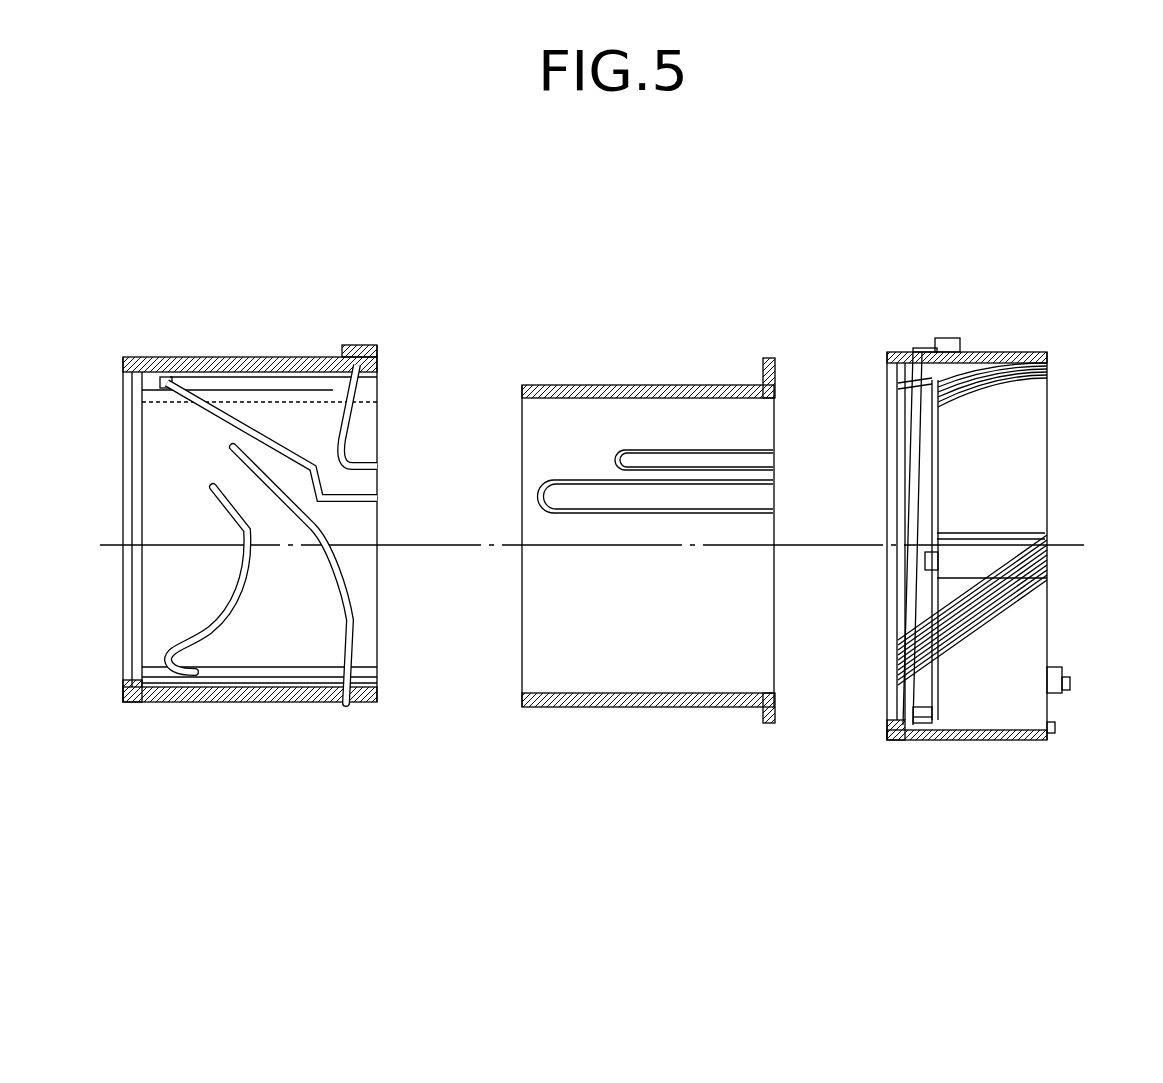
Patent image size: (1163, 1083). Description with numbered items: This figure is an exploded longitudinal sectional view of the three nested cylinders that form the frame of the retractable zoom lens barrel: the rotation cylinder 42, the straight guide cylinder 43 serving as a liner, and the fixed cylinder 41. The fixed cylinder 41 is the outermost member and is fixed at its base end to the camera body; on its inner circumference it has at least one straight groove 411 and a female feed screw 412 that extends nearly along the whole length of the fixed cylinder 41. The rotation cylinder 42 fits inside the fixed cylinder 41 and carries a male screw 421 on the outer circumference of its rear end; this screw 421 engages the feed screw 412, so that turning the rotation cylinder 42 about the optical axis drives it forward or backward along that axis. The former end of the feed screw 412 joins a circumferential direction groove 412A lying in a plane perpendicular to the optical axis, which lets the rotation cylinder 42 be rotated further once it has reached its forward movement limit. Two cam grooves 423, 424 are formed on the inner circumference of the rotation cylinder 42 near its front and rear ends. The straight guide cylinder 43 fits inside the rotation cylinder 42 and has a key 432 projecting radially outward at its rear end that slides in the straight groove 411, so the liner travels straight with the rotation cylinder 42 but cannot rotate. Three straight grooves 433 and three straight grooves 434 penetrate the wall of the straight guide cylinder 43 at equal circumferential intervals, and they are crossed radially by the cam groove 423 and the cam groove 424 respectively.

The fixed cylinder 41 is at (995, 352).
The straight groove 411 is at (988, 560).
The female feed screw 412 is at (1015, 652).
The circumferential direction groove 412A is at (921, 350).
The rotation cylinder 42 is at (250, 355).
The male screw 421 is at (348, 352).
The cam groove 423 is at (218, 632).
The cam groove 424 is at (346, 602).
The straight guide cylinder 43 is at (572, 383).
The key 432 is at (766, 356).
The straight groove 433 is at (592, 478).
The straight groove 434 is at (687, 448).